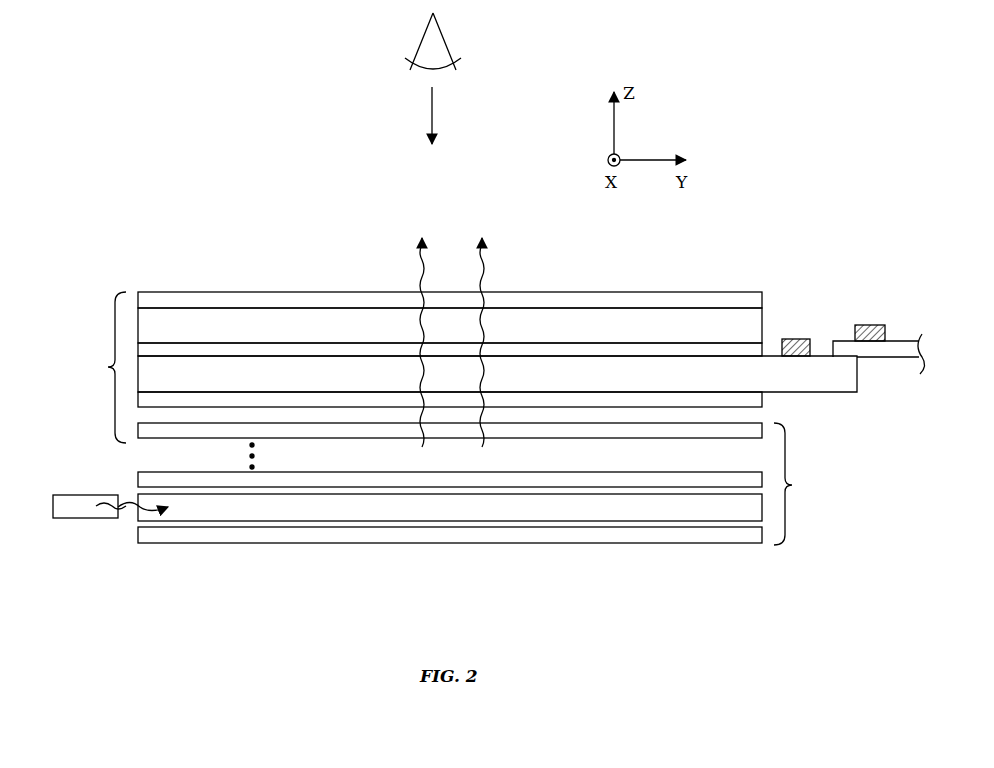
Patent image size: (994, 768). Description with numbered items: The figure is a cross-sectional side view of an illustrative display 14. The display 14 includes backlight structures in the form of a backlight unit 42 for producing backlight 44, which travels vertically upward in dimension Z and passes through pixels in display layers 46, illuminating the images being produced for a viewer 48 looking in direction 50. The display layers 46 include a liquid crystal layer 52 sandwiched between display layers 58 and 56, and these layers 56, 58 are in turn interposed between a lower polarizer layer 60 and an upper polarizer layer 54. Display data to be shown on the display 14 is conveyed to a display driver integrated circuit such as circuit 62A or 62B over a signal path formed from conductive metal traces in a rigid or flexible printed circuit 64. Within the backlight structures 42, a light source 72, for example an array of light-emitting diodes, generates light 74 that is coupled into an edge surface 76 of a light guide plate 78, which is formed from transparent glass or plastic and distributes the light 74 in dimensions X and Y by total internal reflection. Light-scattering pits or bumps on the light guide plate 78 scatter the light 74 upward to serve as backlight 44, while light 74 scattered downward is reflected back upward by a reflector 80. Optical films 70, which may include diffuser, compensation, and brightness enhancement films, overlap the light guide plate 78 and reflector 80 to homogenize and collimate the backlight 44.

The display 14 is at (764, 184).
The backlight unit 42 is at (796, 484).
The backlight 44 is at (486, 272).
The display layers 46 is at (105, 367).
The viewer 48 is at (443, 38).
The direction 50 is at (435, 110).
The liquid crystal layer 52 is at (235, 346).
The upper polarizer layer 54 is at (143, 300).
The display layer 56 is at (190, 323).
The display layer 58 is at (268, 372).
The lower polarizer layer 60 is at (313, 398).
The display driver integrated circuit 62A is at (793, 338).
The display driver integrated circuit 62B is at (876, 325).
The printed circuit 64 is at (891, 352).
The optical films 70 is at (136, 477).
The light source 72 is at (62, 508).
The light 74 is at (104, 506).
The edge surface 76 is at (138, 512).
The light guide plate 78 is at (232, 511).
The reflector 80 is at (320, 538).